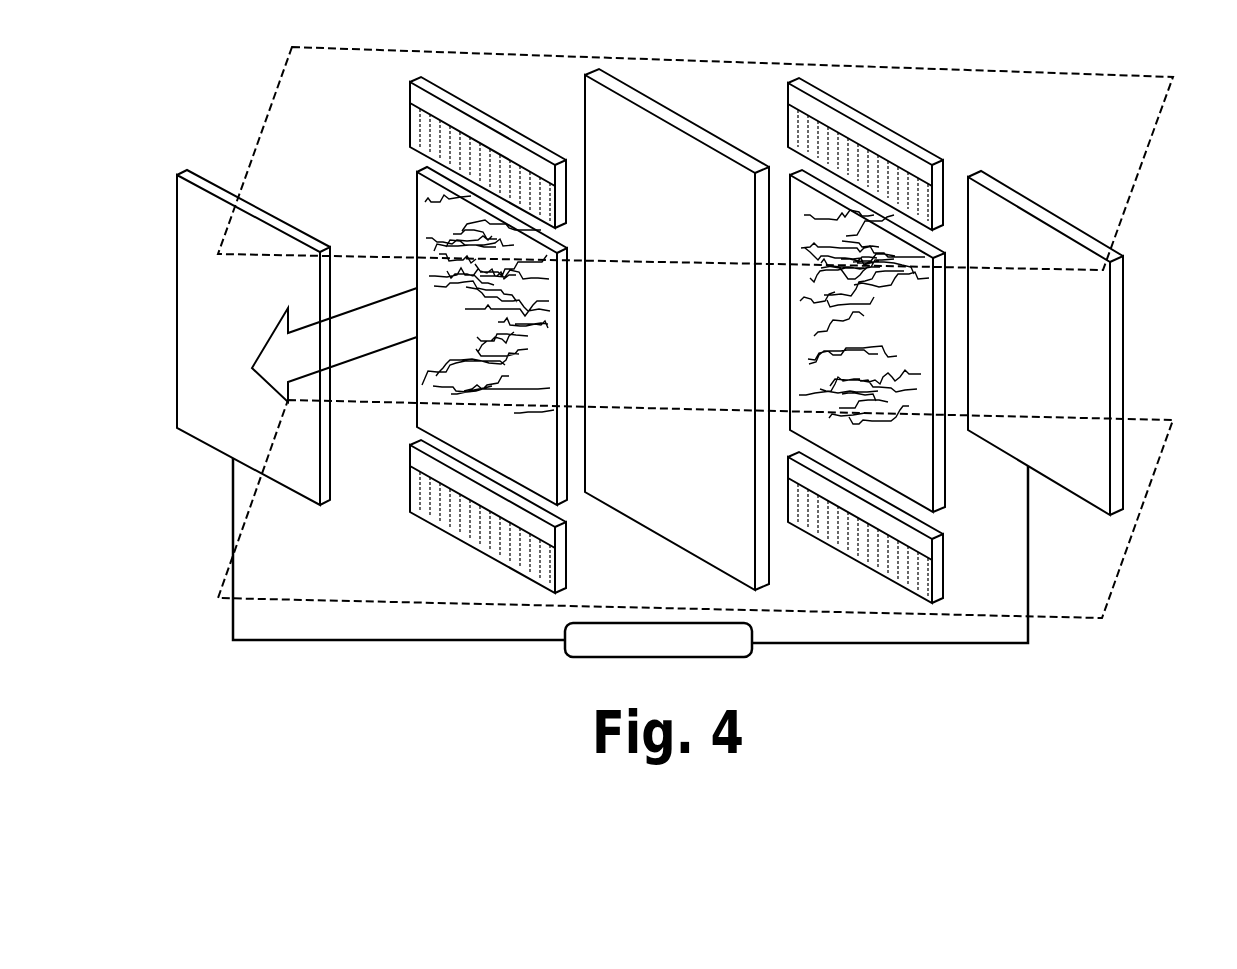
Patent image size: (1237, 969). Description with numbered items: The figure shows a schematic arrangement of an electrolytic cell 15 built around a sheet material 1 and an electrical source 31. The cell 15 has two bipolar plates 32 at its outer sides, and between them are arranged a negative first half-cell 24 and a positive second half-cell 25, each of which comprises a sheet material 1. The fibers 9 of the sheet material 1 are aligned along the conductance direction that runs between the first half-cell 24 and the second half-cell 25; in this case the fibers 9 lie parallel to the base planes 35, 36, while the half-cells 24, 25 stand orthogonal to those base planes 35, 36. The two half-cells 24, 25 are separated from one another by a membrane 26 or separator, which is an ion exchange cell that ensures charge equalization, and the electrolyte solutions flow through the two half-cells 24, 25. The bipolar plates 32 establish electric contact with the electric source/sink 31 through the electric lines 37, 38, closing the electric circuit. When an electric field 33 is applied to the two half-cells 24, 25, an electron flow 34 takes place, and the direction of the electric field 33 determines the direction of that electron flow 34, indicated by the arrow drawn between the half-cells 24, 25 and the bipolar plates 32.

The sheet material 1 is at (985, 489).
The fibers 9 is at (988, 458).
The electrolytic cell 15 is at (1150, 284).
The first half-cell 24 is at (417, 415).
The second half-cell 25 is at (948, 502).
The membrane 26 is at (682, 545).
The electrical source 31 is at (700, 660).
The bipolar plates 32 is at (1158, 368).
The electric field 33 is at (855, 577).
The electron flow 34 is at (348, 362).
The base plane 35 is at (1158, 122).
The base plane 36 is at (1132, 547).
The electric line 37 is at (440, 642).
The electric line 38 is at (830, 647).